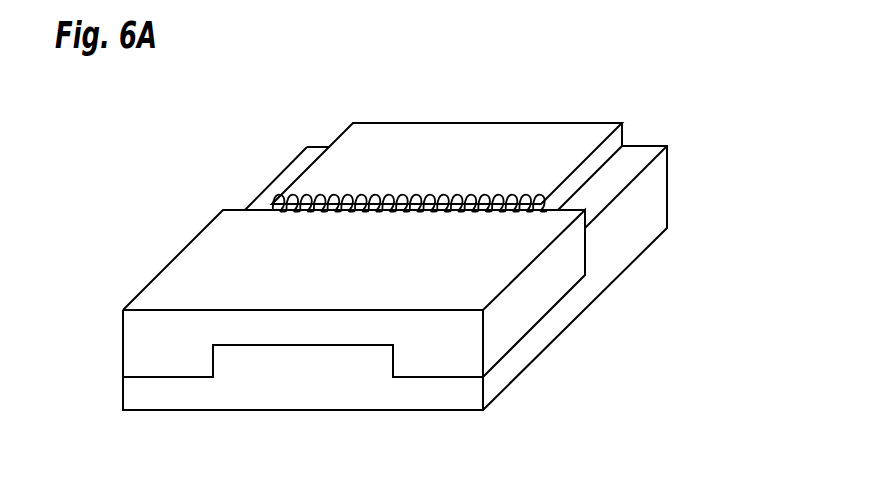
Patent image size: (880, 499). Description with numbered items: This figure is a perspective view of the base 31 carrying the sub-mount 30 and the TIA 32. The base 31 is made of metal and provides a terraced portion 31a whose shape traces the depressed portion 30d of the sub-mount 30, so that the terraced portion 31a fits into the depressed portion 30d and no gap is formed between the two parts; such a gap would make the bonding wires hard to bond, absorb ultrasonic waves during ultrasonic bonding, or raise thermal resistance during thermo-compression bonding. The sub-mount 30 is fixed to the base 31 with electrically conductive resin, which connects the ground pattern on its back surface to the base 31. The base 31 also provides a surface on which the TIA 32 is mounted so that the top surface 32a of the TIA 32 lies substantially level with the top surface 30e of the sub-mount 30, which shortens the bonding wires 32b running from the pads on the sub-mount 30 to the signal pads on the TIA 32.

The sub-mount 30 is at (345, 304).
The depressed portion 30d is at (392, 362).
The top surface 30e is at (197, 260).
The base 31 is at (428, 280).
The terraced portion 31a is at (260, 370).
The TIA 32 is at (466, 133).
The top surface 32a is at (470, 132).
The bonding wires 32b is at (327, 194).